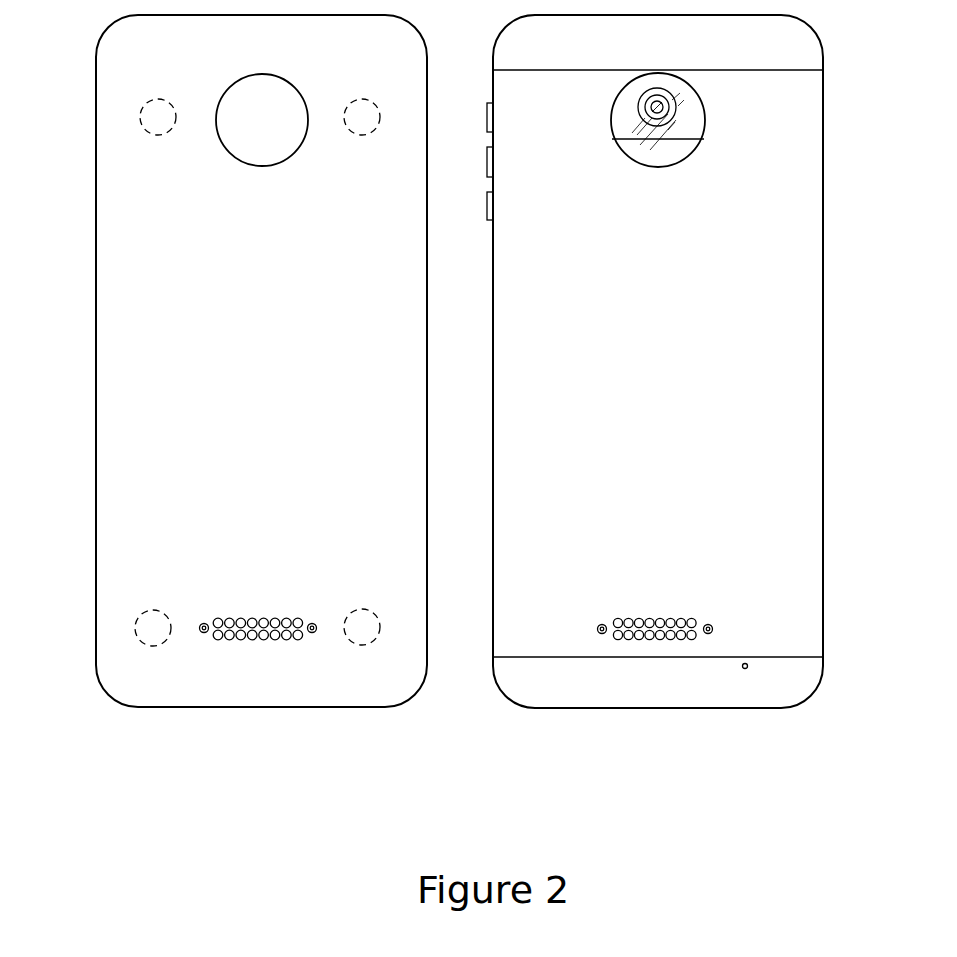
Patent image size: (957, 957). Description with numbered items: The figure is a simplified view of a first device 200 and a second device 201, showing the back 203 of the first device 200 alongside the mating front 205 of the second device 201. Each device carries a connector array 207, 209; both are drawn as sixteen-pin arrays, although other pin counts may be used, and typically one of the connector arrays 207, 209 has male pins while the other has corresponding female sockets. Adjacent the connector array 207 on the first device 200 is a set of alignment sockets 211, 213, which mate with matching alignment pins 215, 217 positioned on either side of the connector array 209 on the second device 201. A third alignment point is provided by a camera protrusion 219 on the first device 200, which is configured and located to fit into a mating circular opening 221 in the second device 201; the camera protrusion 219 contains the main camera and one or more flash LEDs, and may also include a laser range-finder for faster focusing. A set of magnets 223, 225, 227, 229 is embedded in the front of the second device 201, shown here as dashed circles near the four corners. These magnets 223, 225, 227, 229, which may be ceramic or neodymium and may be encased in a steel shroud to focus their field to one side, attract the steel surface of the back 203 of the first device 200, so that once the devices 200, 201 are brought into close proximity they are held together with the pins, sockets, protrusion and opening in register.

The first device 200 is at (687, 407).
The second device 201 is at (225, 407).
The back 203 is at (798, 420).
The mating front 205 is at (118, 416).
The connector array 207 is at (660, 620).
The connector array 209 is at (273, 619).
The alignment socket 211 is at (602, 623).
The alignment socket 213 is at (710, 623).
The alignment pin 215 is at (203, 623).
The alignment pin 217 is at (310, 623).
The camera protrusion 219 is at (687, 152).
The circular opening 221 is at (273, 166).
The magnet 223 is at (148, 617).
The magnet 225 is at (358, 618).
The magnet 227 is at (153, 101).
The magnet 229 is at (355, 101).